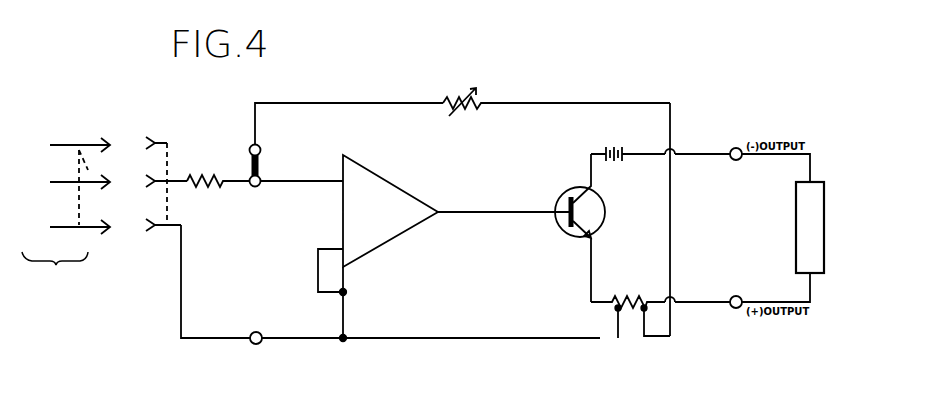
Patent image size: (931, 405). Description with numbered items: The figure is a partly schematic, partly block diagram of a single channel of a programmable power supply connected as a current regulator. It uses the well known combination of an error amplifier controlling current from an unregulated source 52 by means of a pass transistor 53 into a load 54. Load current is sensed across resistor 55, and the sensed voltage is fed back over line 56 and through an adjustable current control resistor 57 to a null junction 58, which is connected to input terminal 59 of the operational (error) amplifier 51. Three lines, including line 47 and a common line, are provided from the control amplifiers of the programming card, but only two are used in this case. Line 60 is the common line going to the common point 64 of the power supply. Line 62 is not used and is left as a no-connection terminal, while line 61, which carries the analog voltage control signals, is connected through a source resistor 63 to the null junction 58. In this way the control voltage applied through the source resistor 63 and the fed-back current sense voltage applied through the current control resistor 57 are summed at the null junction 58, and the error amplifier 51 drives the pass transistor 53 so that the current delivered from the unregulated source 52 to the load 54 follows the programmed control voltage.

The line 47 is at (76, 146).
The operational (error) amplifier 51 is at (381, 180).
The unregulated source 52 is at (617, 147).
The pass transistor 53 is at (563, 234).
The load 54 is at (796, 224).
The resistor 55 is at (631, 297).
The line 56 is at (550, 103).
The adjustable current control resistor 57 is at (468, 104).
The null junction 58 is at (262, 176).
The input terminal 59 is at (340, 179).
The line 60 is at (178, 228).
The line 61 is at (172, 181).
The line 62 is at (160, 141).
The source resistor 63 is at (210, 190).
The common point 64 is at (254, 344).